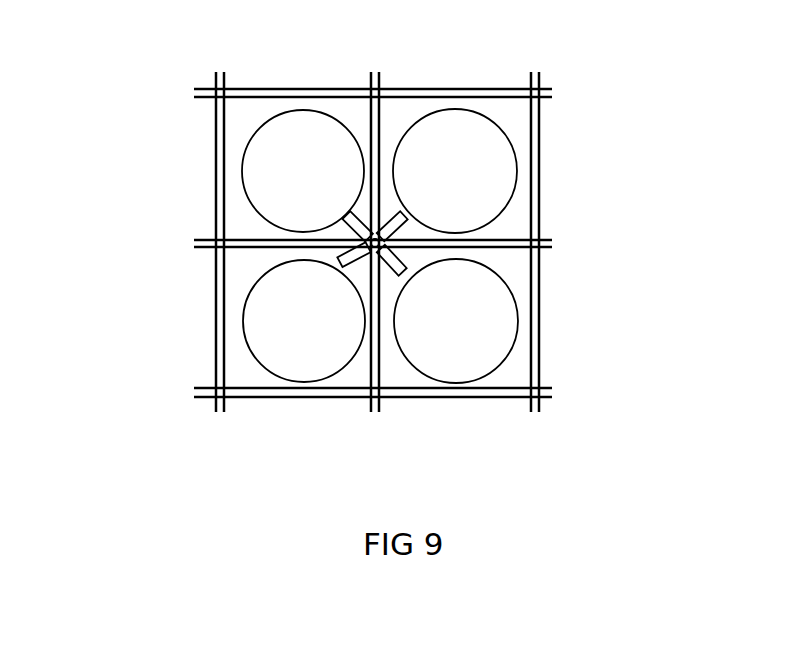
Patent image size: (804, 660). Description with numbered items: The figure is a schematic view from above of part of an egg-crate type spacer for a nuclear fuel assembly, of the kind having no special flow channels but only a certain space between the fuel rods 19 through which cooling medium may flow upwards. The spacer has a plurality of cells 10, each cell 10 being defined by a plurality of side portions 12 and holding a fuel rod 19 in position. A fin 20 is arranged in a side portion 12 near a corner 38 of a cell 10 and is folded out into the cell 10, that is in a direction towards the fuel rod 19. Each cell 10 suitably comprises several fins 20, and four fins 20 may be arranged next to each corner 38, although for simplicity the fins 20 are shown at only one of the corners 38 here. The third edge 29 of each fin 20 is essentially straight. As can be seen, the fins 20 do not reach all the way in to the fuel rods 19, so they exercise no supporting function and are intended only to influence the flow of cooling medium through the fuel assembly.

The cell 10 is at (513, 120).
The side portion 12 is at (371, 120).
The fuel rod 19 is at (492, 175).
The fin 20 is at (417, 228).
The third edge 29 is at (347, 221).
The corner 38 is at (383, 251).